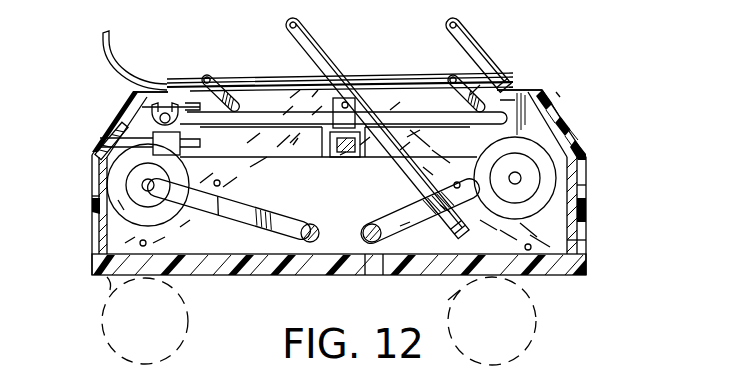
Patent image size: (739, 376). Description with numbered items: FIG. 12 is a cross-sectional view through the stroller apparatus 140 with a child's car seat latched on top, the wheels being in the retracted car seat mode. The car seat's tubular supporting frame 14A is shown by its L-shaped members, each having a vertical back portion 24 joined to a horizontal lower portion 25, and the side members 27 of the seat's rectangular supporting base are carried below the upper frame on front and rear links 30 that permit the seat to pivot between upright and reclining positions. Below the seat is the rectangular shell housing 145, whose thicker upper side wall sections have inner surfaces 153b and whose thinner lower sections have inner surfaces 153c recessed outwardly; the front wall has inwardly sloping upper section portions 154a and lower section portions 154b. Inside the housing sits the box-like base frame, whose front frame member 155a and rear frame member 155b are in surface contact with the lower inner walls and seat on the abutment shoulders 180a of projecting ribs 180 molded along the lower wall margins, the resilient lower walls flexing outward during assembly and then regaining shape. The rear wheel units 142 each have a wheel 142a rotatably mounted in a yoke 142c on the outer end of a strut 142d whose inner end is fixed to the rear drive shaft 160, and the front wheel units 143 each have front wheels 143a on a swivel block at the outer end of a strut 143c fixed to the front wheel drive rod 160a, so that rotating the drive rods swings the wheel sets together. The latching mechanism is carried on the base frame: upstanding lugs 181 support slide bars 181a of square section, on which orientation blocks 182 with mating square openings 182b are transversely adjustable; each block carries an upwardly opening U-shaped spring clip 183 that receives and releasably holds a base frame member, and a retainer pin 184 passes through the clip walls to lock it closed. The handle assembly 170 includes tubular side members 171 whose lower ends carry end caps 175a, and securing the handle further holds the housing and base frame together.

The tubular supporting frame 14A is at (498, 50).
The vertical back portion 24 is at (117, 50).
The horizontal lower portion 25 is at (232, 76).
The side members 27 is at (255, 117).
The front and rear links 30 is at (207, 76).
The stroller apparatus 140 is at (600, 243).
The rear wheel units 142 is at (87, 148).
The wheel 142a is at (118, 204).
The yoke 142c is at (192, 203).
The strut or leg 142d is at (280, 246).
The front wheel units 143 is at (563, 143).
The front wheels 143a is at (562, 126).
The strut or leg 143c is at (415, 262).
The shell housing 145 is at (556, 92).
The inner surfaces 153b is at (507, 100).
The inner surfaces 153c is at (553, 240).
The upper section portions 154a is at (133, 90).
The lower section portions 154b is at (95, 170).
The front frame member 155a is at (583, 193).
The rear frame member 155b is at (94, 203).
The drive shaft 160 is at (312, 256).
The front wheel drive rod 160a is at (352, 250).
The handle assembly 170 is at (318, 32).
The tubular side members 171 is at (317, 42).
The end caps or plugs 175a is at (481, 282).
The projecting ribs 180 is at (107, 278).
The abutment shoulders 180a is at (118, 278).
The lugs or ears 181 is at (320, 142).
The slide bars or rods 181a is at (340, 160).
The slide block 182 is at (176, 141).
The slide block openings 182b is at (350, 158).
The U-shaped spring clip 183 is at (347, 100).
The retainer pin 184 is at (184, 100).